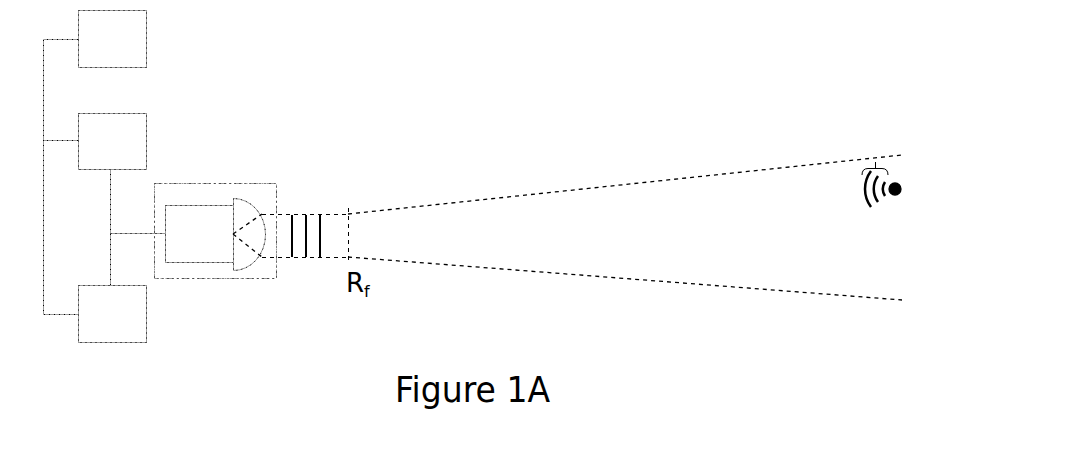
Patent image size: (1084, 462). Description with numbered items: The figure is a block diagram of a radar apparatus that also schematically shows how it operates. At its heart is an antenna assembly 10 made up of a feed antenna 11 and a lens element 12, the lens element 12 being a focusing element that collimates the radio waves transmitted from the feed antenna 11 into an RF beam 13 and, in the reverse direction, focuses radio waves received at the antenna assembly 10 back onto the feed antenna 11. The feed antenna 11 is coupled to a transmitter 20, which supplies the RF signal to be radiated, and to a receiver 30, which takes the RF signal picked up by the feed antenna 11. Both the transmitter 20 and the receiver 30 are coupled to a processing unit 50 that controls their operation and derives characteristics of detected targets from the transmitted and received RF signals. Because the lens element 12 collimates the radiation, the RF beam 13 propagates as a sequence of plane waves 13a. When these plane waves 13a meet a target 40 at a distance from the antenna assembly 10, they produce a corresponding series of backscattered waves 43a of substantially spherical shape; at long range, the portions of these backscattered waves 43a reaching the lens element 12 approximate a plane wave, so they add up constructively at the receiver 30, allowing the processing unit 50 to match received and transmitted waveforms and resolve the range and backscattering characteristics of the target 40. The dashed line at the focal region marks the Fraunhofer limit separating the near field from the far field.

The processing unit 50 is at (113, 39).
The transmitter 20 is at (113, 142).
The receiver 30 is at (113, 314).
The antenna assembly 10 is at (197, 181).
The feed antenna 11 is at (200, 234).
The lens element 12 is at (246, 261).
The plane waves 13a is at (285, 205).
The RF beam 13 is at (572, 190).
The backscattered waves 43a is at (875, 167).
The target 40 is at (900, 193).